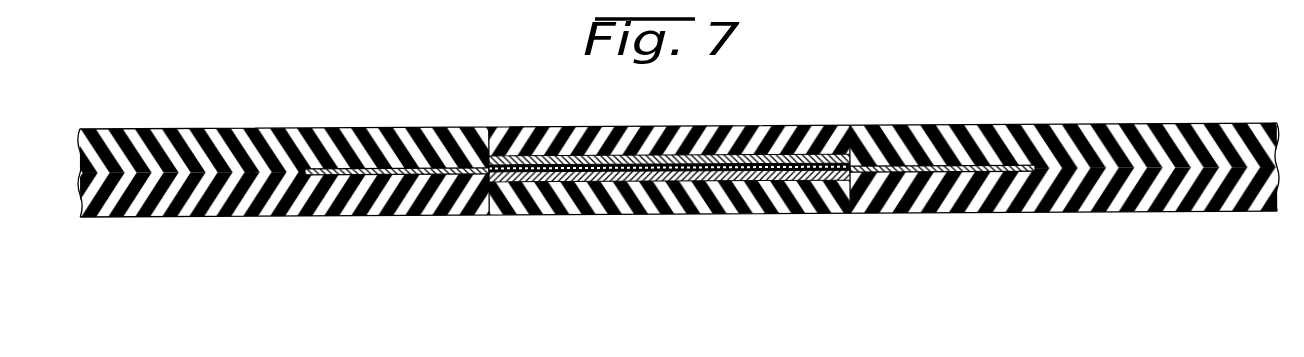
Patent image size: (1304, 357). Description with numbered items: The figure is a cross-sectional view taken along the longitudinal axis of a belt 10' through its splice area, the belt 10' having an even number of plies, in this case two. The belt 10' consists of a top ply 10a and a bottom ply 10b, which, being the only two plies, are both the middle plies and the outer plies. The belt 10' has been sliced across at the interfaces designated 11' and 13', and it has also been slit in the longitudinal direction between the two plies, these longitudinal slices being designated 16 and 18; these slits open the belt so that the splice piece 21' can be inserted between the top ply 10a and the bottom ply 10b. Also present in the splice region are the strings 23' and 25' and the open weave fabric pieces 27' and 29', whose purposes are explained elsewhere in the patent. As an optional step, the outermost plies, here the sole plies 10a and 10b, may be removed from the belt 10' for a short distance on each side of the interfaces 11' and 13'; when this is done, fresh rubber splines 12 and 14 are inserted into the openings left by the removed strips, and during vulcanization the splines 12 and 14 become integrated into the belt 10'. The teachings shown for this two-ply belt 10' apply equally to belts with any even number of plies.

The belt 10' is at (678, 133).
The top ply 10a is at (420, 128).
The bottom ply 10b is at (415, 205).
The longitudinal slice 16 is at (452, 160).
The string 23' is at (289, 229).
The interface 11' is at (669, 141).
The rubber spline 12 is at (543, 127).
The open weave fabric piece 27' is at (669, 121).
The interface 13' is at (669, 222).
The open weave fabric piece 29' is at (669, 223).
The rubber spline 14 is at (585, 213).
The longitudinal slice 18 is at (897, 160).
The splice piece 21' is at (1063, 200).
The string 25' is at (1063, 228).